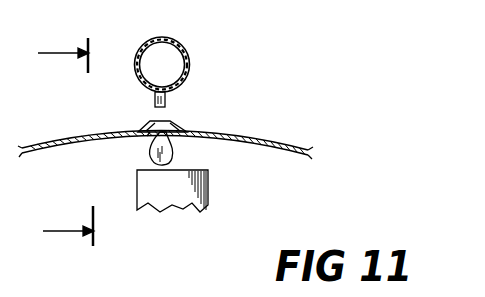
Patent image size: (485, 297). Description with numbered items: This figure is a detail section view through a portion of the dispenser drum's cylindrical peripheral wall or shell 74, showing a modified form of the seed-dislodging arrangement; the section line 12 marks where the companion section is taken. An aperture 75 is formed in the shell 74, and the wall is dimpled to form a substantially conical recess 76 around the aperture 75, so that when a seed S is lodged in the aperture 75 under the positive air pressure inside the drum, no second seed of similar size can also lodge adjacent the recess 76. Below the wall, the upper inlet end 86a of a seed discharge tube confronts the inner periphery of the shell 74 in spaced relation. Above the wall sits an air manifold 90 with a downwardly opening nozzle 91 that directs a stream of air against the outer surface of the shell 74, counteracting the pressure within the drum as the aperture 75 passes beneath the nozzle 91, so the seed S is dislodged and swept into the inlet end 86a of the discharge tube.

The section line 12- 12 is at (87, 144).
The peripheral wall 74 is at (276, 140).
The aperture 75 is at (150, 121).
The recess 76 is at (150, 135).
The inlet end 86a is at (208, 190).
The air manifold 90 is at (190, 62).
The nozzle 91 is at (166, 101).
The seed S is at (172, 150).